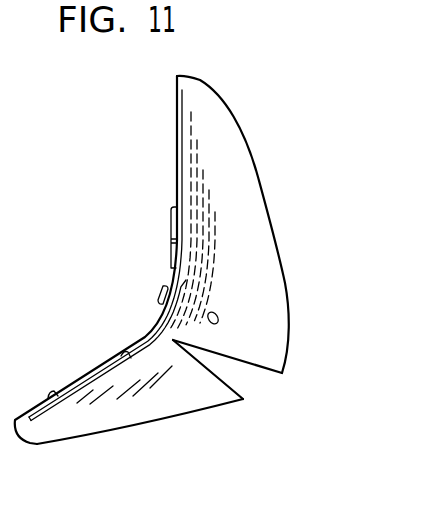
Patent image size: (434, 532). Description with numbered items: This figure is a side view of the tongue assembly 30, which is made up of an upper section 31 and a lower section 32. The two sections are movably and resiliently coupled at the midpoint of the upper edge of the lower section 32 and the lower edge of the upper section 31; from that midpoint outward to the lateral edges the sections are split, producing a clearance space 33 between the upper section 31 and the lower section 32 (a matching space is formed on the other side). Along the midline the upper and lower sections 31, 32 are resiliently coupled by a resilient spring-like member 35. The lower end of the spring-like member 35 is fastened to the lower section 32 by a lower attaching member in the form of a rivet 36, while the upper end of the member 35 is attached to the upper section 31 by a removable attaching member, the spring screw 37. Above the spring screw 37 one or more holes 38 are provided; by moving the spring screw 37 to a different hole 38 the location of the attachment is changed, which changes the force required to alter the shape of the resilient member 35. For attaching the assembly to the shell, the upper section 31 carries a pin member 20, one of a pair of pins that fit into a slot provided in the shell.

The tongue assembly 30 is at (262, 170).
The upper section 31 is at (252, 238).
The lower section 32 is at (92, 422).
The clearance space 33 is at (247, 378).
The resilient spring-like member 35 is at (162, 323).
The rivet 36 is at (123, 356).
The spring screw 37 is at (162, 292).
The hole 38 is at (172, 263).
The pin member 20 is at (218, 314).